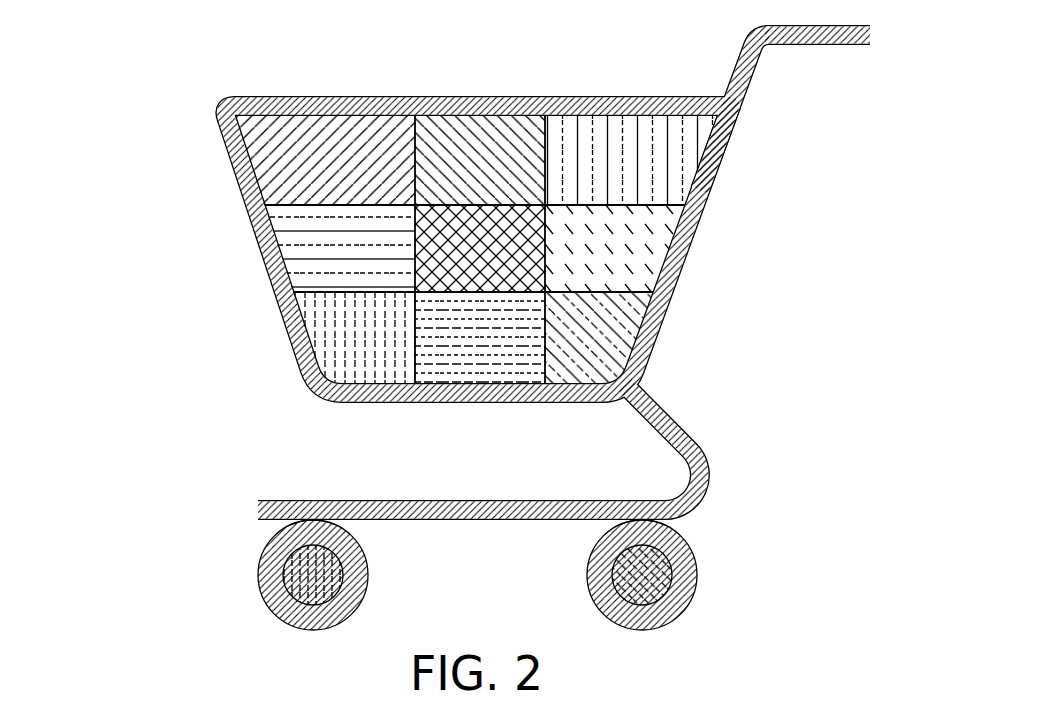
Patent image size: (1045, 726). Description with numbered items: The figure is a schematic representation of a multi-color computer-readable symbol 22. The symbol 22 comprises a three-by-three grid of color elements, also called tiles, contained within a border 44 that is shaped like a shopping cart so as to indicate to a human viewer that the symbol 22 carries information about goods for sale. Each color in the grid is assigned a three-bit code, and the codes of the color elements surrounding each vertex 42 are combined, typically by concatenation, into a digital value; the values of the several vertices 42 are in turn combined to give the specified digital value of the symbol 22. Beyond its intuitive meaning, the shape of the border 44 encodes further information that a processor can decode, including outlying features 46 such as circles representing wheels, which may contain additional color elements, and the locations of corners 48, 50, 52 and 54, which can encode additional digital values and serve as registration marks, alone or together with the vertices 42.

The multi-color computer-readable symbol 22 is at (490, 318).
The vertex 42 is at (547, 210).
The border 44 is at (700, 248).
The outlying features 46 is at (368, 575).
The corner 48 is at (870, 35).
The corner 50 is at (220, 103).
The corner 52 is at (258, 510).
The corner 54 is at (343, 522).